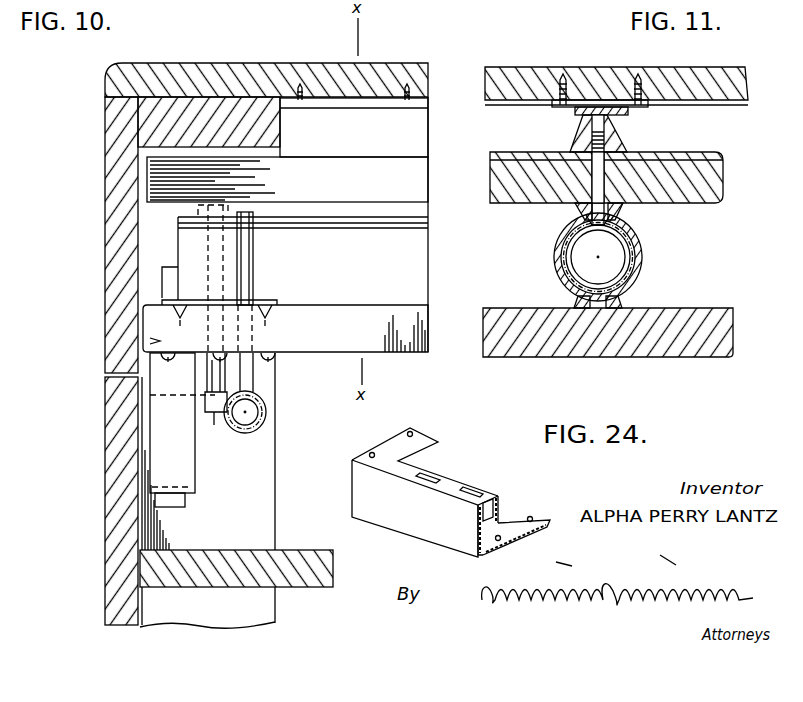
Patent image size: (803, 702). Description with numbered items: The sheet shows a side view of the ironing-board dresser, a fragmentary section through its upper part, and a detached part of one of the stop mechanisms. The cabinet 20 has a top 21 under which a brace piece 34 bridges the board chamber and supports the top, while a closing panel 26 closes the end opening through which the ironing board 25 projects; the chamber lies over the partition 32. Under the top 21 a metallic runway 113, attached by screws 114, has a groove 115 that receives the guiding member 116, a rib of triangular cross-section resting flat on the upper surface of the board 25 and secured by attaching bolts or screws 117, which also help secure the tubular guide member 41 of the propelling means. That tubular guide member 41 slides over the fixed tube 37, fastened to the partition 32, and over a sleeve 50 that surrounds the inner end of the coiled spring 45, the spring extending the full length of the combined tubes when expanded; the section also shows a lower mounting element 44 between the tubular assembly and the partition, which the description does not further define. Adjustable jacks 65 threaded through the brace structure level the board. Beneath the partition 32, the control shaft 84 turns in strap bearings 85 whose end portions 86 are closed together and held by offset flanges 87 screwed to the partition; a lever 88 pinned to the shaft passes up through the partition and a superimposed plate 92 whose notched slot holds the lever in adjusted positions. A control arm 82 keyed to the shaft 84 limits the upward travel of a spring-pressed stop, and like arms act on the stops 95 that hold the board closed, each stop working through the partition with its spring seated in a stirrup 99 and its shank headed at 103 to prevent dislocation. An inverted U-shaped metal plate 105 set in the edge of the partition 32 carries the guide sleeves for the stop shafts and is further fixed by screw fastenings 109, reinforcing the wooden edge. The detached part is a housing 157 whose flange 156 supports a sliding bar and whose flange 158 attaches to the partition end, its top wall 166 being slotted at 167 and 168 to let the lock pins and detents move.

In FIG. 10, the cabinet 20 is at (112, 485).
In FIG. 10, the top 21 is at (380, 68).
In FIG. 11, the top 21 is at (697, 72).
In FIG. 10, the ironing board 25 is at (287, 179).
In FIG. 11, the ironing board 25 is at (725, 183).
In FIG. 10, the closing panel 26 is at (105, 213).
In FIG. 10, the partition 32 is at (394, 353).
In FIG. 11, the partition 32 is at (702, 315).
In FIG. 10, the brace piece 34 is at (140, 127).
In FIG. 10, the fixed tube 37 is at (303, 224).
In FIG. 11, the fixed tube 37 is at (570, 282).
In FIG. 11, the tubular guide member 41 is at (560, 258).
In FIG. 11, the lower bracket 44 is at (625, 297).
In FIG. 11, the coiled spring 45 is at (642, 246).
In FIG. 11, the sleeve 50 is at (637, 267).
In FIG. 10, the adjustable jacks 65 is at (200, 407).
In FIG. 10, the control arm 82 is at (215, 412).
In FIG. 10, the control shaft 84 is at (253, 418).
In FIG. 10, the bearings 85 is at (262, 404).
In FIG. 10, the end portions 86 is at (254, 375).
In FIG. 10, the offset flanges 87 is at (272, 355).
In FIG. 10, the lever 88 is at (253, 214).
In FIG. 10, the superimposed plate 92 is at (273, 304).
In FIG. 10, the stops 95 is at (165, 277).
In FIG. 10, the stirrups 99 is at (150, 437).
In FIG. 10, the headed end 103 is at (179, 498).
In FIG. 10, the inverted U-shaped metal plate 105 is at (143, 312).
In FIG. 10, the screw fastenings 109 is at (158, 341).
In FIG. 10, the metallic runway 113 is at (330, 102).
In FIG. 11, the metallic runway 113 is at (570, 104).
In FIG. 11, the screws 114 is at (565, 75).
In FIG. 11, the groove 115 is at (597, 115).
In FIG. 11, the guiding member 116 is at (620, 125).
In FIG. 11, the attaching bolts or screws 117 is at (578, 204).
In FIG. 24, the flange 156 is at (478, 538).
In FIG. 24, the housing 157 is at (417, 525).
In FIG. 24, the flange 158 is at (518, 530).
In FIG. 24, the top wall 166 is at (390, 475).
In FIG. 24, the slot 167 is at (437, 472).
In FIG. 24, the slot 168 is at (483, 492).